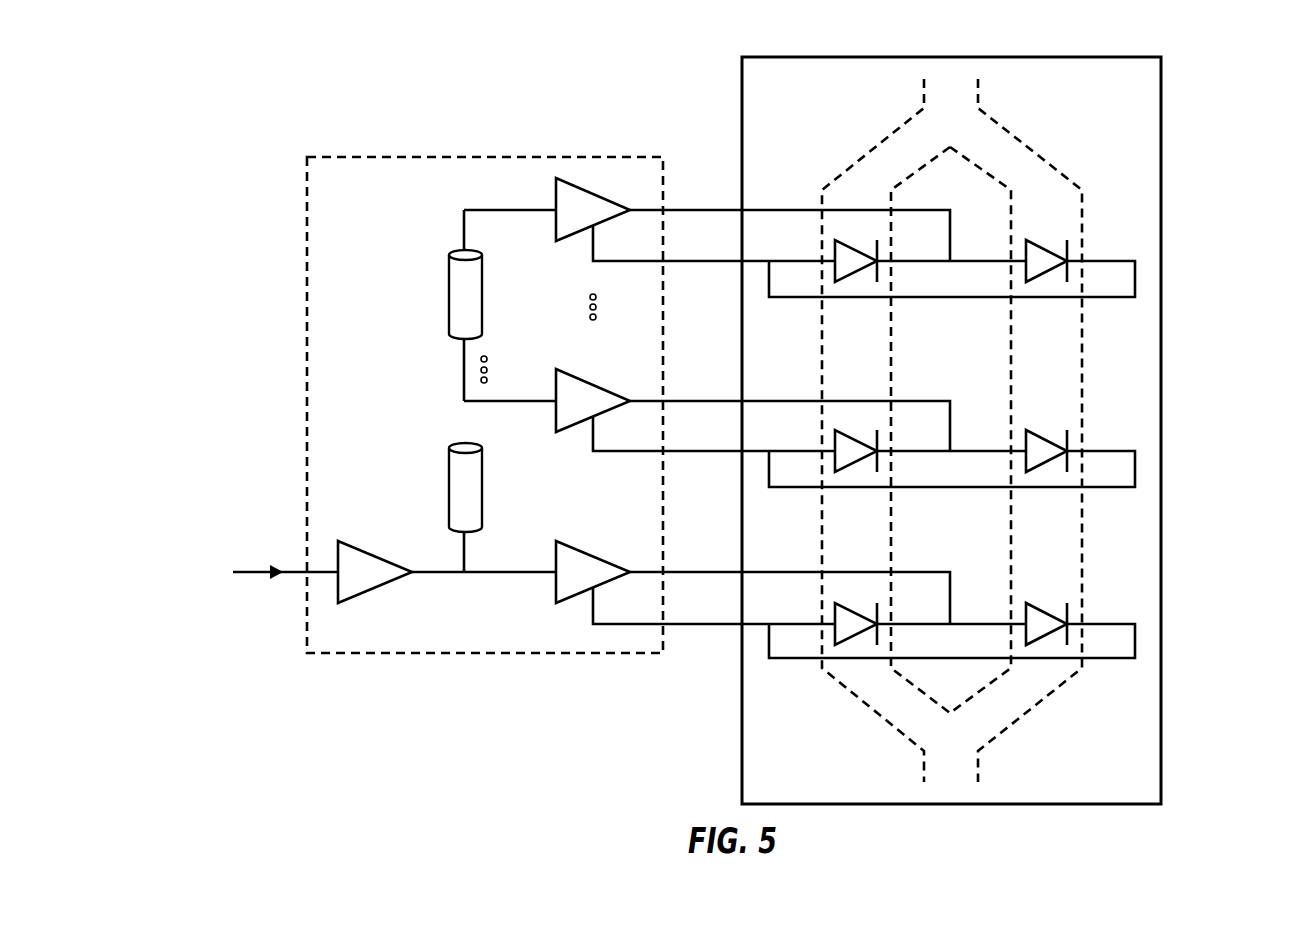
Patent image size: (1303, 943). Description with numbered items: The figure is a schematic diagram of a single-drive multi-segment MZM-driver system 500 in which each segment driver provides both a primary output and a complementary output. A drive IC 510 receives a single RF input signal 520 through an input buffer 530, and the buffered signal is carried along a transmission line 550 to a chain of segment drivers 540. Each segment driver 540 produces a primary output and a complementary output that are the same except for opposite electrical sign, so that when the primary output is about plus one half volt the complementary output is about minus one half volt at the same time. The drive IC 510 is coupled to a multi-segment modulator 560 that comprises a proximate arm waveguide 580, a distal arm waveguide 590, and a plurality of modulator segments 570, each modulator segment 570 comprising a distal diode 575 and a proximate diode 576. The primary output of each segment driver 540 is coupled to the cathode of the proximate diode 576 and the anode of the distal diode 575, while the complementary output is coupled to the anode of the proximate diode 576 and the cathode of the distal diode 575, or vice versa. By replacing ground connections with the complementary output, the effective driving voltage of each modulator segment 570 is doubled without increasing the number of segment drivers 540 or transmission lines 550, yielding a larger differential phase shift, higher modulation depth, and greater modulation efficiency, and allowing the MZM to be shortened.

The single-drive multi-segment MZM-driver system 500 is at (252, 72).
The drive IC 510 is at (307, 175).
The RF input signal 520 is at (251, 576).
The input buffer 530 is at (372, 591).
The segment driver 540 is at (556, 223).
The transmission line 550 is at (449, 292).
The multi-segment modulator 560 is at (742, 78).
The modulator segment 570 is at (1170, 211).
The distal diode 575 is at (1050, 247).
The proximate diode 576 is at (835, 246).
The proximate arm waveguide 580 is at (871, 151).
The distal arm waveguide 590 is at (1035, 152).